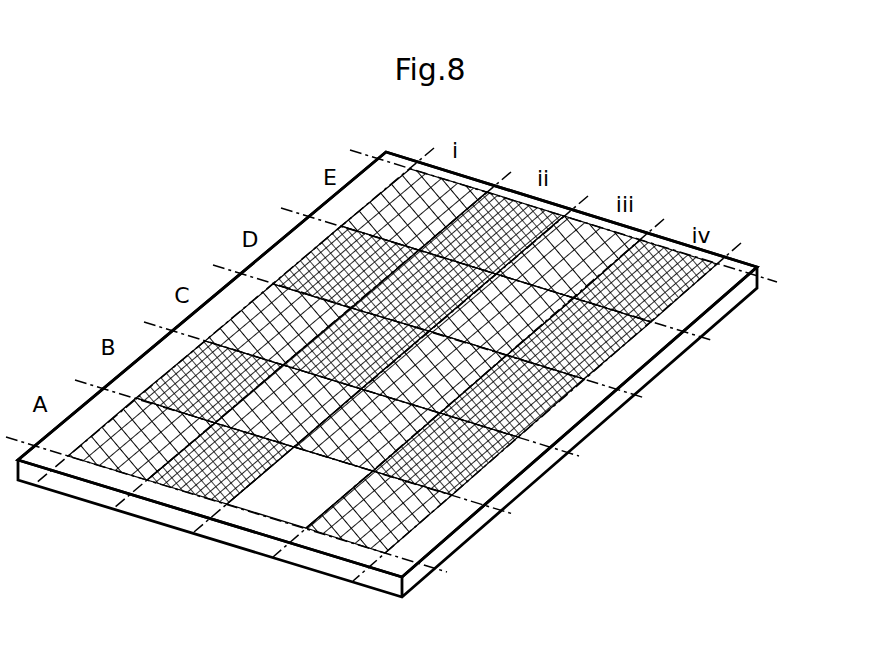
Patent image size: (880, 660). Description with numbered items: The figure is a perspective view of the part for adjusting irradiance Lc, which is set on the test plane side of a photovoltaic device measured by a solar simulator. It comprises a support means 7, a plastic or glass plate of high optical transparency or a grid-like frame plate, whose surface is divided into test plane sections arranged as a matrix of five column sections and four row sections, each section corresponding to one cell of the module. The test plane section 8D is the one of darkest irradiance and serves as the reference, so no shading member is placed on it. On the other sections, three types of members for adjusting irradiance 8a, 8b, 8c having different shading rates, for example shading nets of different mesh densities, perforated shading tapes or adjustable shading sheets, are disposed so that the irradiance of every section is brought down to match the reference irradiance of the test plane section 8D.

The support means 7 is at (760, 270).
The member for adjusting irradiance 8a is at (163, 330).
The member for adjusting irradiance 8b is at (287, 313).
The member for adjusting irradiance 8c is at (352, 318).
The test plane section 8D is at (292, 500).
The part for adjusting irradiance Lc is at (626, 240).